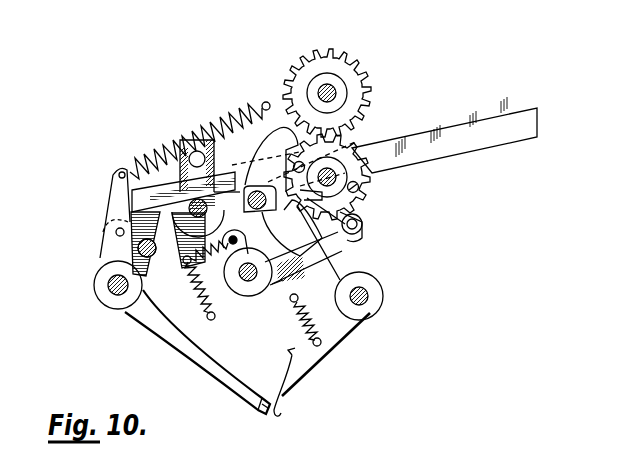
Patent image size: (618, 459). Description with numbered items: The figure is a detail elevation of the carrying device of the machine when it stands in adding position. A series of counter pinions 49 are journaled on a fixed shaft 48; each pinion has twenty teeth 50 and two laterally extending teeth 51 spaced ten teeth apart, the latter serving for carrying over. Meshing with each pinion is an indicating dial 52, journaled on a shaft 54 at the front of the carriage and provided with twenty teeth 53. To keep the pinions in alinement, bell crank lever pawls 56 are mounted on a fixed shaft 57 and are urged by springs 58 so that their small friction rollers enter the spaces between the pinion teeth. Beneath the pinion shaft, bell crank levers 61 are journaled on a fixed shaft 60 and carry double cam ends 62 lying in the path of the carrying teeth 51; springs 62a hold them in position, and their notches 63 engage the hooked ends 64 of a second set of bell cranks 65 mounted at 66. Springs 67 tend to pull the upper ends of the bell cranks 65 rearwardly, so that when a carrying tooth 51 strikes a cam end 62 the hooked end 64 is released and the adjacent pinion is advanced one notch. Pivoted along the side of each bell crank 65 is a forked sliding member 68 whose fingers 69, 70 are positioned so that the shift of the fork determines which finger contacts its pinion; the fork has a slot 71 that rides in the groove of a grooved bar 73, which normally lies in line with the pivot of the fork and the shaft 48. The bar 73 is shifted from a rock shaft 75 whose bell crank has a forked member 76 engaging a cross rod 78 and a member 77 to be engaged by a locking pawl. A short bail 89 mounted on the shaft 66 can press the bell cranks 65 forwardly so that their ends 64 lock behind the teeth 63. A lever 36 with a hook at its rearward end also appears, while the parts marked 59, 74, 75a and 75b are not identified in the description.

The lever 36 is at (487, 127).
The fixed shaft 48 is at (332, 173).
The counter pinions 49 is at (352, 172).
The teeth 50 is at (362, 194).
The laterally extending teeth 51 is at (356, 232).
The indicating dials 52 is at (355, 88).
The teeth 53 is at (362, 62).
The shaft 54 is at (325, 90).
The bell crank lever pawls 56 is at (284, 280).
The fixed shaft 57 is at (246, 280).
The springs 58 is at (192, 285).
The link 59 is at (358, 198).
The fixed shaft 60 is at (363, 300).
The bell crank levers 61 is at (343, 318).
The double cam ends 62 is at (310, 200).
The springs 62a is at (306, 345).
The notches 63 is at (290, 354).
The hooked ends 64 is at (262, 406).
The bell cranks 65 is at (162, 327).
The shaft 66 is at (108, 285).
The springs 67 is at (215, 140).
The forked sliding member 68 is at (153, 172).
The finger 69 is at (288, 135).
The finger 70 is at (315, 228).
The slots 71 is at (280, 205).
The grooved bar 73 is at (256, 183).
The pin 74 is at (234, 238).
The rock shaft 75 is at (113, 220).
The spring 75a is at (198, 298).
The lug 75b is at (183, 240).
The forked member 76 is at (165, 200).
The member 77 is at (190, 152).
The cross rod 78 is at (200, 153).
The short bail 89 is at (135, 248).